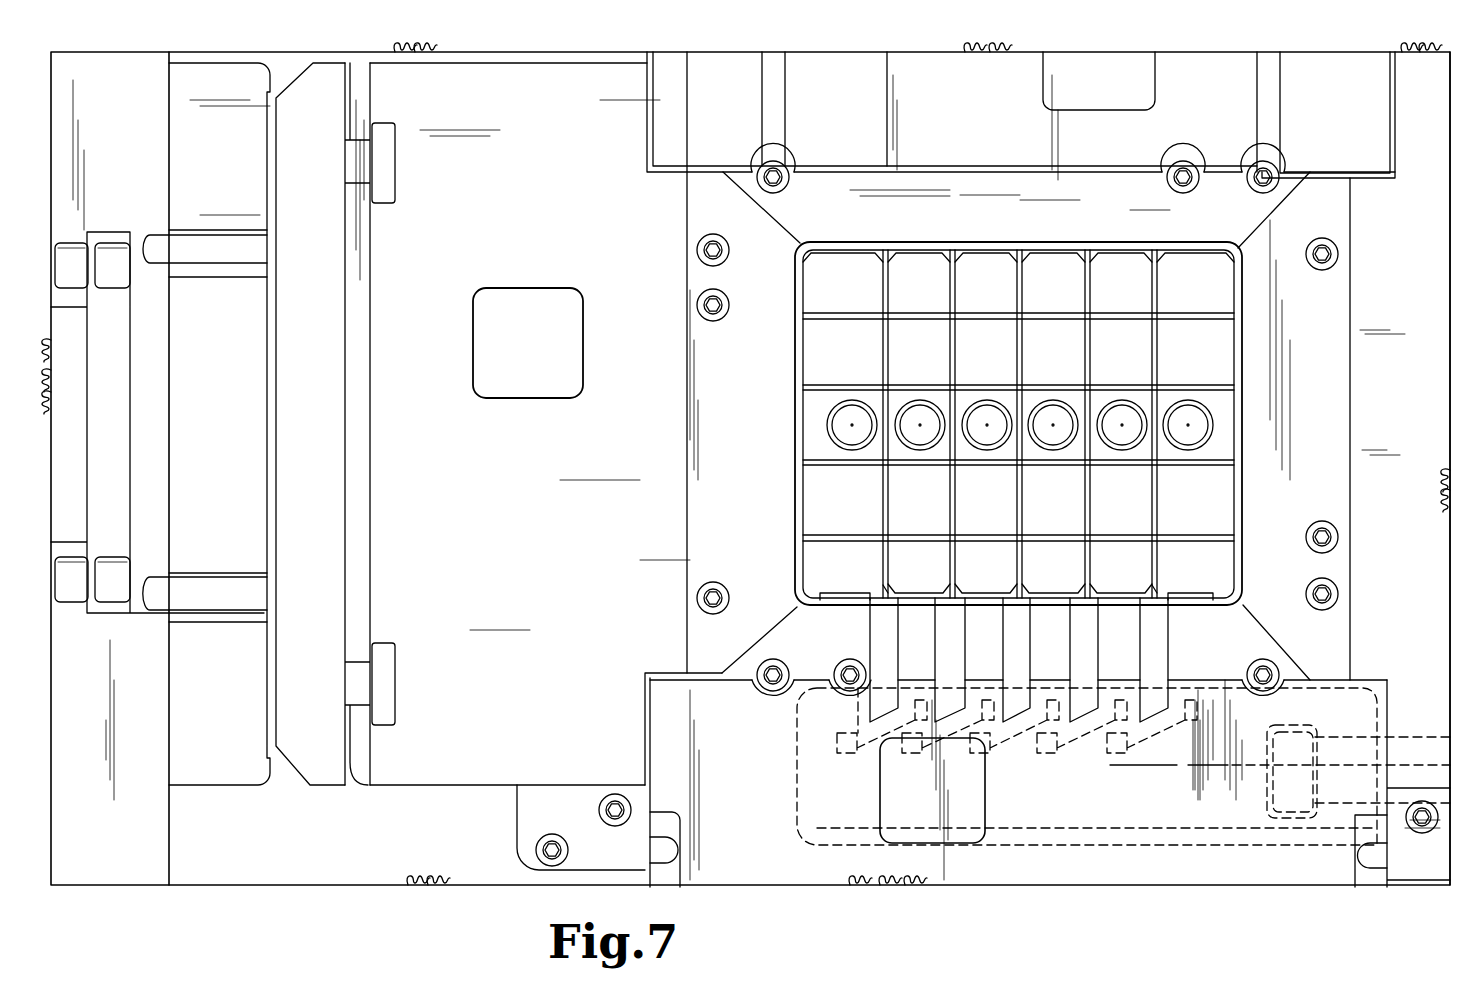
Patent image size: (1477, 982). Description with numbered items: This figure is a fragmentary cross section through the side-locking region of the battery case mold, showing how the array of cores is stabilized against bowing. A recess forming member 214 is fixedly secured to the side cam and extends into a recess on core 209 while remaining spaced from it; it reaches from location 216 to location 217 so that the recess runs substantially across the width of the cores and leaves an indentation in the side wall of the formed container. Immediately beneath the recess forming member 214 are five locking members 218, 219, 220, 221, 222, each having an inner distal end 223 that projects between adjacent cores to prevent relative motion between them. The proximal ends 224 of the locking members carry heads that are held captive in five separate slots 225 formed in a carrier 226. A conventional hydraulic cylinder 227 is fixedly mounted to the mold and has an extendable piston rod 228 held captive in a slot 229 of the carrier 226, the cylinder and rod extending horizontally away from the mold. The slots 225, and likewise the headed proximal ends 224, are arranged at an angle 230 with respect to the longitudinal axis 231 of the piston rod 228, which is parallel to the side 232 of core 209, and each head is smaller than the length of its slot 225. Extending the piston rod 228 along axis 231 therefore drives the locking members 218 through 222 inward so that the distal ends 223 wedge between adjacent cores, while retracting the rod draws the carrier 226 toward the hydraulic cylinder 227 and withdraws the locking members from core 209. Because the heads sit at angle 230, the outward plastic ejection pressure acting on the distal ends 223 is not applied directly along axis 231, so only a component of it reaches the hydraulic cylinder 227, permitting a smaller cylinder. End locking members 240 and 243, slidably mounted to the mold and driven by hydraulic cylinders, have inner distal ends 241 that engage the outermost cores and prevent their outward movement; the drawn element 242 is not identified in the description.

The core 209 is at (806, 505).
The recess forming member 214 is at (922, 612).
The location 216 is at (1155, 595).
The location 217 is at (882, 591).
The locking member 218 is at (896, 637).
The locking member 219 is at (963, 637).
The locking member 220 is at (1028, 637).
The locking member 221 is at (1096, 637).
The locking member 222 is at (1166, 637).
The inner distal end 223 is at (1010, 593).
The proximal end 224 is at (1020, 738).
The slot 225 is at (971, 752).
The carrier 226 is at (1377, 706).
The hydraulic cylinder 227 is at (1412, 742).
The piston rod 228 is at (1335, 778).
The slot 229 is at (1267, 784).
The angle 230 is at (1148, 720).
The longitudinal axis 231 is at (1192, 765).
The side 232 is at (1048, 597).
The end locking member 240 is at (458, 378).
The inner distal end 241 is at (795, 400).
The flange 242 is at (80, 470).
The end locking member 243 is at (1370, 349).